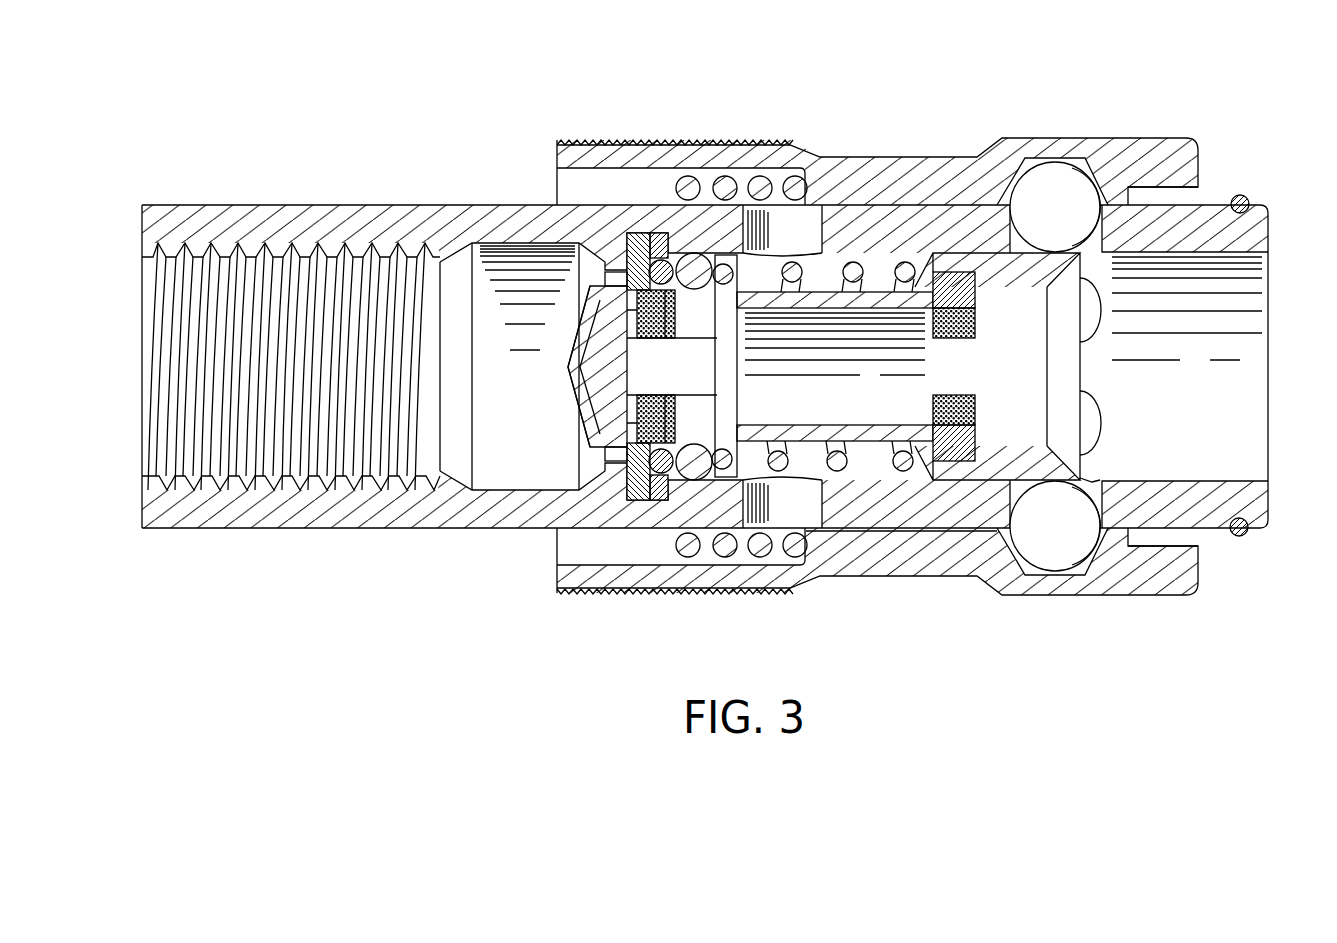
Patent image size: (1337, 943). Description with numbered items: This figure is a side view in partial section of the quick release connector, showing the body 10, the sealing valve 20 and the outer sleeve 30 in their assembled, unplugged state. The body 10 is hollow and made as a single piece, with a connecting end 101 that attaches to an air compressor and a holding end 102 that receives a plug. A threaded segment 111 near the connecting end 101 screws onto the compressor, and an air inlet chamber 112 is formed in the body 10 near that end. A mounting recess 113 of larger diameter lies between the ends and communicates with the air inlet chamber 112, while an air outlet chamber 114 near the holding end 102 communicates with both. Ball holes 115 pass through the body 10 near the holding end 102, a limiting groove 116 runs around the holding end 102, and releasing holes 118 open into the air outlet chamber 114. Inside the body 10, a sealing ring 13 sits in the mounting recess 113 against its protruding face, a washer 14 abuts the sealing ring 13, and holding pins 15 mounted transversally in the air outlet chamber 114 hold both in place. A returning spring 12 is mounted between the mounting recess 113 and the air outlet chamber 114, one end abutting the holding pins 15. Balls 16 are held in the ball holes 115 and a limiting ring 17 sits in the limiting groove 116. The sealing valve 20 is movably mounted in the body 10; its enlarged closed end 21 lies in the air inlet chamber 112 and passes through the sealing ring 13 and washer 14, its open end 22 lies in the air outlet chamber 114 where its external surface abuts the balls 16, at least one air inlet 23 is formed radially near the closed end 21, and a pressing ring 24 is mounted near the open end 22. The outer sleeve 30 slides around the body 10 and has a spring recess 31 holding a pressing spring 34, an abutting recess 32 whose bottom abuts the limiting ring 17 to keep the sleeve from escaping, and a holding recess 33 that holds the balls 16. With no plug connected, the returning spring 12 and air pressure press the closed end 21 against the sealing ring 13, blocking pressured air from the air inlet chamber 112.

The body 10 is at (360, 556).
The connecting end 101 is at (142, 512).
The holding end 102 is at (1270, 503).
The threaded segment 111 is at (178, 318).
The air inlet chamber 112 is at (512, 488).
The mounting recess 113 is at (648, 250).
The air outlet chamber 114 is at (865, 470).
The ball holes 115 is at (1092, 478).
The limiting groove 116 is at (1248, 204).
The releasing holes 118 is at (810, 225).
The returning spring 12 is at (905, 268).
The sealing ring 13 is at (636, 500).
The washer 14 is at (655, 500).
The holding pins 15 is at (697, 285).
The balls 16 is at (1063, 178).
The limiting ring 17 is at (1239, 538).
The sealing valve 20 is at (554, 394).
The closed end 21 is at (572, 352).
The open end 22 is at (1062, 450).
The air inlet 23 is at (737, 408).
The pressing ring 24 is at (978, 298).
The outer sleeve 30 is at (877, 339).
The spring recess 31 is at (777, 560).
The abutting recess 32 is at (1152, 193).
The holding recess 33 is at (1030, 575).
The pressing spring 34 is at (760, 182).